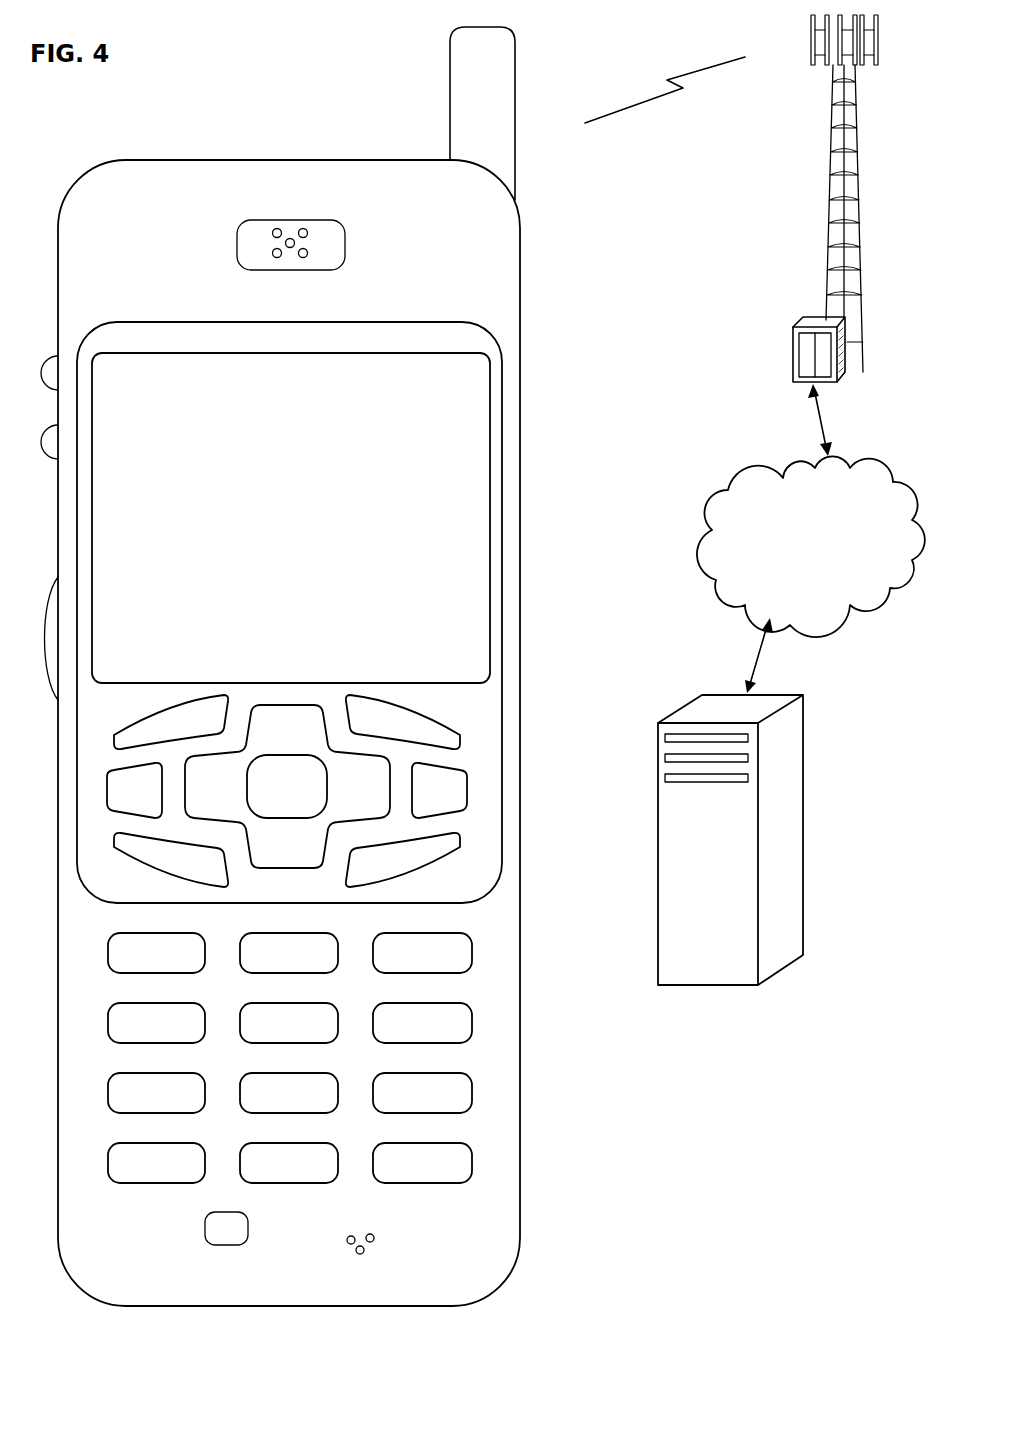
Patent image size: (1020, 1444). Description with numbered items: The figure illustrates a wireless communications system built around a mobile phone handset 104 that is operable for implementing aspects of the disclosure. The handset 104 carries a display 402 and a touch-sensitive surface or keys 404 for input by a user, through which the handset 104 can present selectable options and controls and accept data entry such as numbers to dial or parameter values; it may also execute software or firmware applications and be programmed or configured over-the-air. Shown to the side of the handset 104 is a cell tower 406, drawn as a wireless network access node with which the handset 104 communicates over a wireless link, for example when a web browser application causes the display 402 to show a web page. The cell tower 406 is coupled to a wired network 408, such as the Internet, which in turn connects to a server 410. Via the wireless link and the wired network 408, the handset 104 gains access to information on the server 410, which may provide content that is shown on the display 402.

The handset 104 is at (317, 681).
The display 402 is at (490, 368).
The keys 404 is at (526, 1088).
The cell tower 406 is at (826, 213).
The wired network 408 is at (722, 596).
The server 410 is at (704, 985).